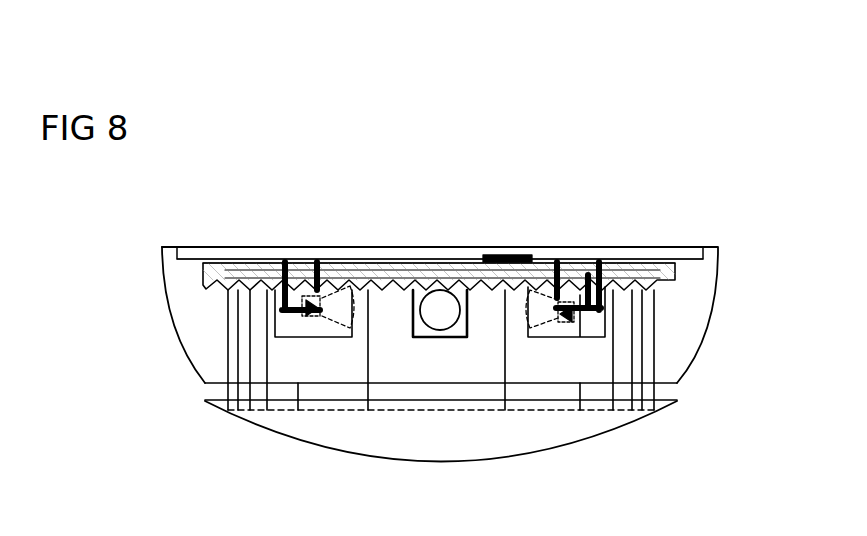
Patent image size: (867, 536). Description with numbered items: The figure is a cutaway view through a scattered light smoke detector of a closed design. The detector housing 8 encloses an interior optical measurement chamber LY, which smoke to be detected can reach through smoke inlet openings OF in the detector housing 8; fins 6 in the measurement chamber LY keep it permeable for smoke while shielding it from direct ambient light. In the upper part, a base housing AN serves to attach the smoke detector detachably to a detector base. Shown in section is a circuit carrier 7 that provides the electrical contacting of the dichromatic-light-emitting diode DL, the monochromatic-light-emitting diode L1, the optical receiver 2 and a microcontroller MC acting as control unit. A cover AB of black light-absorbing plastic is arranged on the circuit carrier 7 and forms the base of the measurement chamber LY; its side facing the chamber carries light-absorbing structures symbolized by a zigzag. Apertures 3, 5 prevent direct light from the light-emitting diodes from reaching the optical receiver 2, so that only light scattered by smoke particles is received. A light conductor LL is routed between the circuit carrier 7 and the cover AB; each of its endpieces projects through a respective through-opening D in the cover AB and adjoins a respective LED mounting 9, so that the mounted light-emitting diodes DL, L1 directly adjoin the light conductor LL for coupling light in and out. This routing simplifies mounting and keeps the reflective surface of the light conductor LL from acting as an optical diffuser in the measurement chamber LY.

The optical receiver 2 is at (433, 327).
The aperture 3 is at (353, 320).
The aperture 5 is at (461, 330).
The fins 6 is at (657, 367).
The circuit carrier 7 is at (397, 270).
The detector housing 8 is at (703, 305).
The LED mounting 9 is at (333, 337).
The cover AB is at (264, 270).
The base housing AN is at (637, 258).
The through-opening D is at (320, 263).
The dichromatic-light-emitting diode DL is at (302, 338).
The monochromatic-light-emitting diode L1 is at (578, 340).
The light conductor LL is at (442, 465).
The optical measurement chamber LY is at (651, 333).
The microcontroller MC is at (500, 254).
The smoke inlet openings OF is at (200, 393).